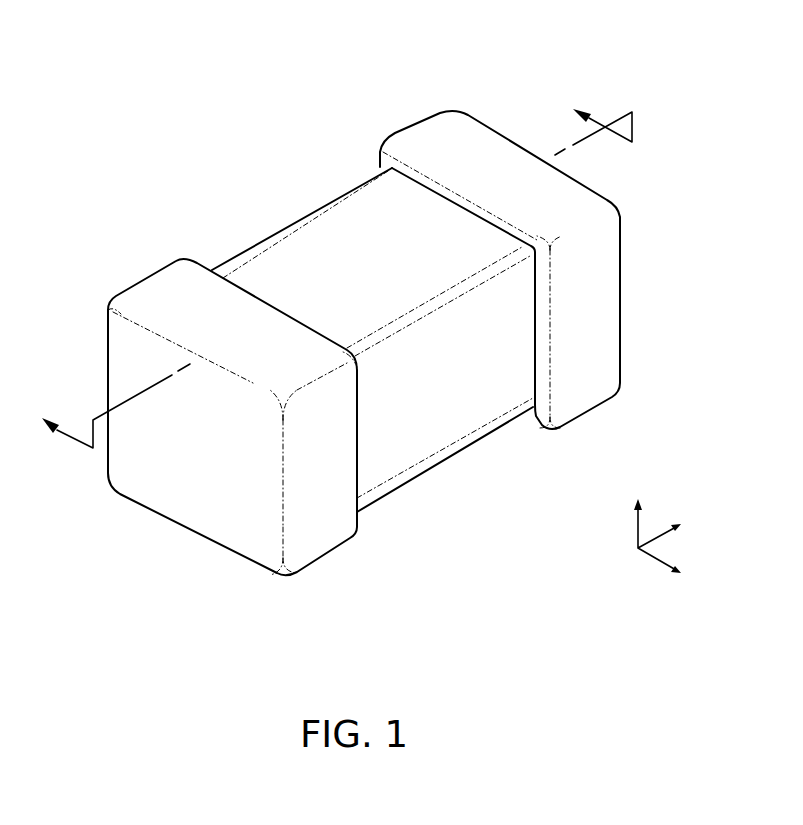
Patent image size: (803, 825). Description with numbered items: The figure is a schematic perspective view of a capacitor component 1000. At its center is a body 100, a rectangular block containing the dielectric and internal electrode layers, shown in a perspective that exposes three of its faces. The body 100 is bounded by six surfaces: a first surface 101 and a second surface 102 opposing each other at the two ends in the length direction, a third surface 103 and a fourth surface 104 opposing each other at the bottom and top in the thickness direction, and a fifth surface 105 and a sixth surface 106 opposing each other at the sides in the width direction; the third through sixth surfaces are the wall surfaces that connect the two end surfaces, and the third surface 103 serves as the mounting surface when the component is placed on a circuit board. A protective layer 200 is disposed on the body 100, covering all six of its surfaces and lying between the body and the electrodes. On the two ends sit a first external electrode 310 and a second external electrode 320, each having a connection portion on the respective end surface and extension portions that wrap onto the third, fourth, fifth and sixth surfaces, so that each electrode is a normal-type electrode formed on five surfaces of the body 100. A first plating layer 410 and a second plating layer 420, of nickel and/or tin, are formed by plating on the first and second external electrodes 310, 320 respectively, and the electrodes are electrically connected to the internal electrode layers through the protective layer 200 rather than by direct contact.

The capacitor component 1000 is at (158, 82).
The body 100 is at (395, 326).
The first surface 101 is at (203, 490).
The second surface 102 is at (570, 287).
The third surface 103 is at (407, 430).
The fourth surface 104 is at (320, 242).
The fifth surface 105 is at (453, 407).
The sixth surface 106 is at (307, 267).
The protective layer 200 is at (288, 225).
The first external electrode 310 is at (220, 392).
The second external electrode 320 is at (482, 243).
The first plating layer 410 is at (163, 292).
The second plating layer 420 is at (427, 142).